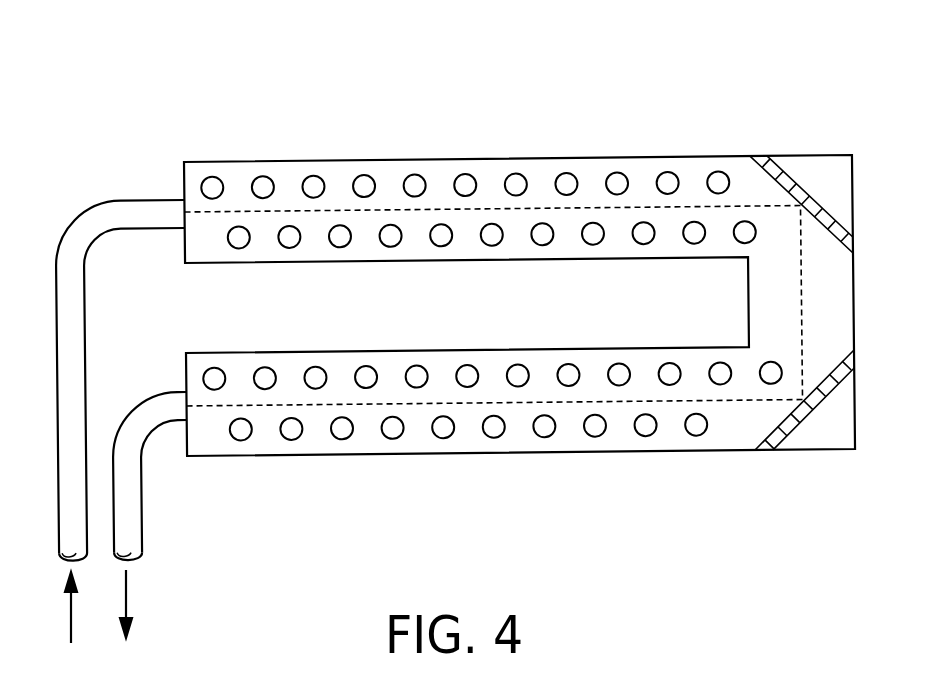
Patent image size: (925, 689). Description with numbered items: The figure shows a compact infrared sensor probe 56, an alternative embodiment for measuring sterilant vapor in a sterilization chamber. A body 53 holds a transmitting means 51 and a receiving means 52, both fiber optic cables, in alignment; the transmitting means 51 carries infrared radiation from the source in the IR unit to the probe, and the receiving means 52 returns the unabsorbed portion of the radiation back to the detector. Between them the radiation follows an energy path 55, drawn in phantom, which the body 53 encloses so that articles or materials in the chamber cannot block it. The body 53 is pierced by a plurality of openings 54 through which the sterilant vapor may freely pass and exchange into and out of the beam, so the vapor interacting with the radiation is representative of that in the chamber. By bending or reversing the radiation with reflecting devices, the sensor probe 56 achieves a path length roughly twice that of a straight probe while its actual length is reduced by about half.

The transmitting means 51 is at (81, 213).
The receiving means 52 is at (138, 483).
The body 53 is at (300, 167).
The openings 54 is at (668, 177).
The energy path 55 is at (433, 211).
The sensor probe 56 is at (447, 335).